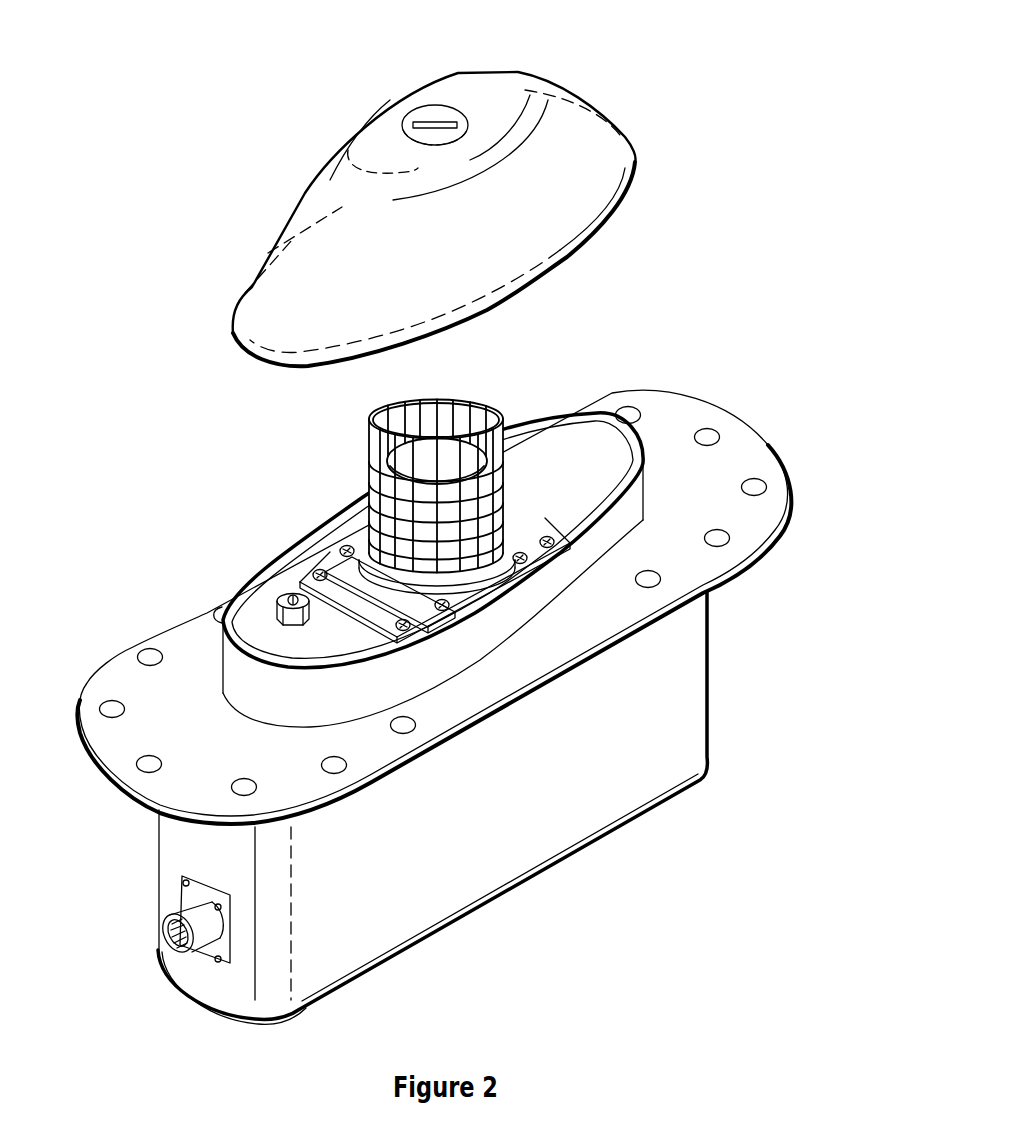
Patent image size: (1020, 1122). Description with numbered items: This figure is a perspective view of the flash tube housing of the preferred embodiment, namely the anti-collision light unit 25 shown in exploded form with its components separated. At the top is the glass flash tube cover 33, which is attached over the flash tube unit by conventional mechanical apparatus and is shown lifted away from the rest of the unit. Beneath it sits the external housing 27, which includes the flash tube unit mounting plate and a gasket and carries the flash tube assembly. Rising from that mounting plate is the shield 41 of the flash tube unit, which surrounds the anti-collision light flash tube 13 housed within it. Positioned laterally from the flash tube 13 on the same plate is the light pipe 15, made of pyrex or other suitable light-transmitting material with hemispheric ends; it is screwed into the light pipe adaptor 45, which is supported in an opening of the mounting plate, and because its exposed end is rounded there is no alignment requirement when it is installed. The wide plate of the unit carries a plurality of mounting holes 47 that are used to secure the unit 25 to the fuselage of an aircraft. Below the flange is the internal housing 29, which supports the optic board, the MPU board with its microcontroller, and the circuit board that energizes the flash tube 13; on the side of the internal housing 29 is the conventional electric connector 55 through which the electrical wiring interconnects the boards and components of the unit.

The anti-collision light flash tube 13 is at (367, 500).
The light pipe 15 is at (289, 598).
The anti-collision light unit 25 is at (758, 350).
The external housing 27 is at (568, 588).
The internal housing 29 is at (617, 788).
The glass flash tube cover 33 is at (593, 143).
The shield 41 is at (367, 467).
The light pipe adaptor 45 is at (277, 610).
The mounting holes 47 is at (760, 487).
The electric connector 55 is at (200, 925).